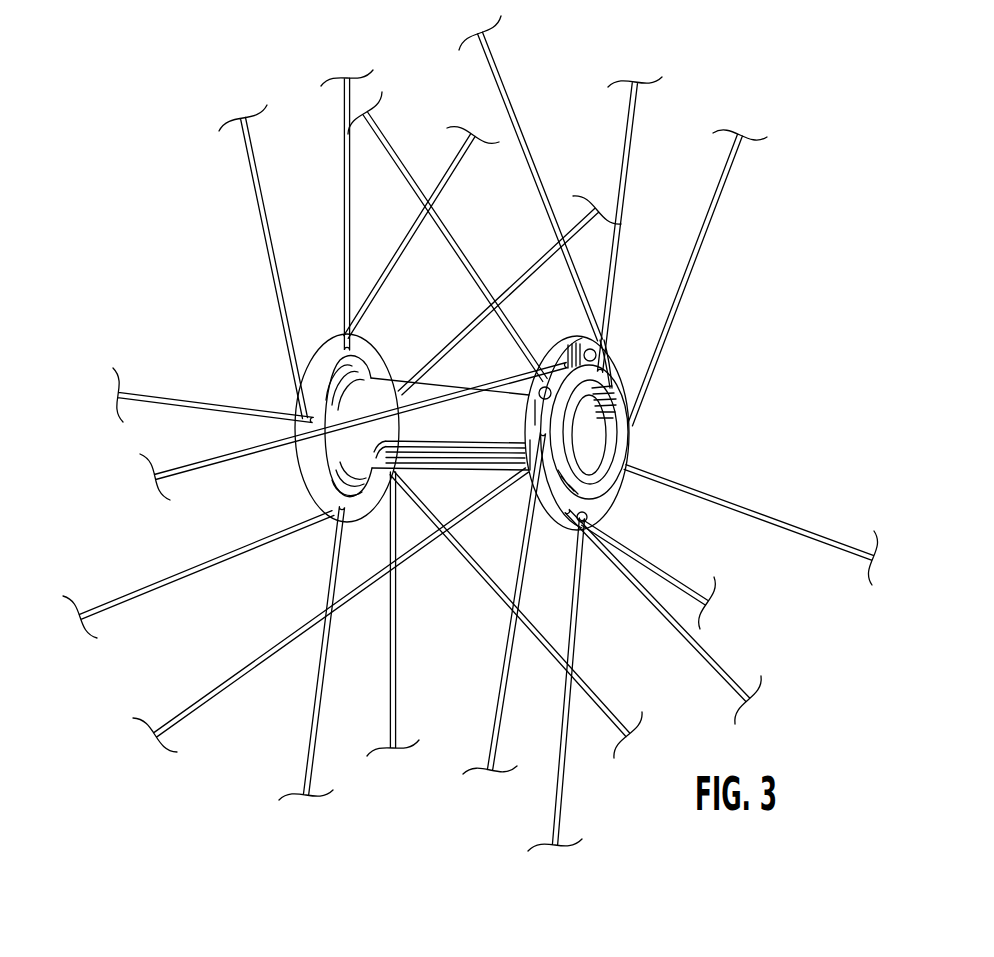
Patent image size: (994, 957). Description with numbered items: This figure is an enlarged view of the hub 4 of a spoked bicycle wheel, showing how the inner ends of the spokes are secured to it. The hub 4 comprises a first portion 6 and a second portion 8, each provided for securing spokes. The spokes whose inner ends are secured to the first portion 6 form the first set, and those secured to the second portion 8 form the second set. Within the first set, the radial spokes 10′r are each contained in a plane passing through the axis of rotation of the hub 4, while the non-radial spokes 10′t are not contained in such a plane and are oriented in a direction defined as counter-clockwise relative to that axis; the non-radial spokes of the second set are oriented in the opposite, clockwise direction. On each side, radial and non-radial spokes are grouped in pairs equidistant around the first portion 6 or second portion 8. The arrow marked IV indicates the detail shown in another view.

The hub 4 is at (455, 375).
The first portion 6 is at (618, 374).
The second portion 8 is at (320, 372).
The radial spokes of the first set 10′r is at (625, 170).
The non-radial spokes of the first set 10′t is at (527, 153).
The section line IV is at (828, 436).